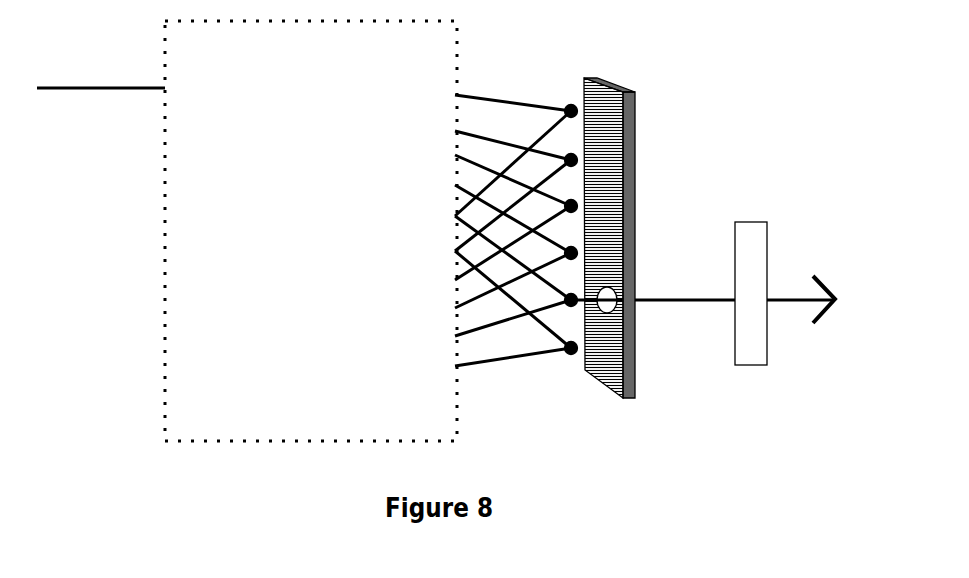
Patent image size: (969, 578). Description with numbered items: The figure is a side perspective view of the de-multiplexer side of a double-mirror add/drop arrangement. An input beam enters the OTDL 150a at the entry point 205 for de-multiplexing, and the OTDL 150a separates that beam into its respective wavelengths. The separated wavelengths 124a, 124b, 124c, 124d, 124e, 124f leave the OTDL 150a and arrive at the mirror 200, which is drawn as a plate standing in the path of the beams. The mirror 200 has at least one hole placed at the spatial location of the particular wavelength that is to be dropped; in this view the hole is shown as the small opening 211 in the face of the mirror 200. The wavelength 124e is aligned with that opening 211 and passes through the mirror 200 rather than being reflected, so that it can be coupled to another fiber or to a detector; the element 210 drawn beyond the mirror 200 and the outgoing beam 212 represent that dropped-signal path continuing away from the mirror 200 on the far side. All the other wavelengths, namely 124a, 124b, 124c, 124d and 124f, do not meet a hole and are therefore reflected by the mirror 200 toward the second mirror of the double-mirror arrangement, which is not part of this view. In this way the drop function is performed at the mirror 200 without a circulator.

The input beam entry 205 is at (100, 72).
The OTDL 150a is at (314, 251).
The wavelength 124a is at (518, 149).
The wavelength 124b is at (518, 189).
The wavelength 124c is at (518, 217).
The wavelength 124d is at (518, 246).
The wavelength 124e is at (518, 276).
The wavelength 124f is at (519, 308).
The mirror 200 is at (613, 80).
The aperture in mask plate 211 is at (607, 308).
The optical element (lens/filter) 210 is at (758, 222).
The output beam 212 is at (777, 304).